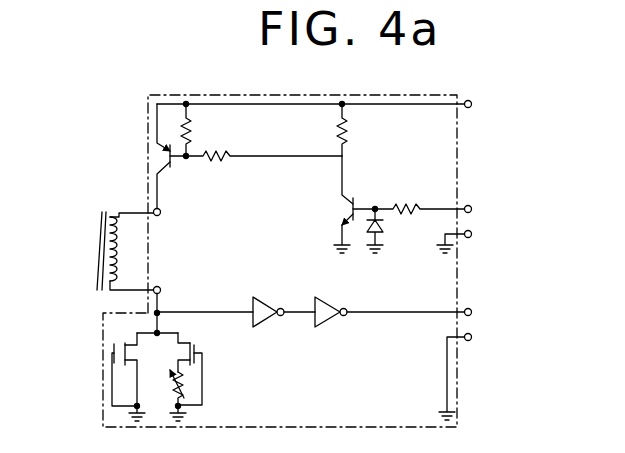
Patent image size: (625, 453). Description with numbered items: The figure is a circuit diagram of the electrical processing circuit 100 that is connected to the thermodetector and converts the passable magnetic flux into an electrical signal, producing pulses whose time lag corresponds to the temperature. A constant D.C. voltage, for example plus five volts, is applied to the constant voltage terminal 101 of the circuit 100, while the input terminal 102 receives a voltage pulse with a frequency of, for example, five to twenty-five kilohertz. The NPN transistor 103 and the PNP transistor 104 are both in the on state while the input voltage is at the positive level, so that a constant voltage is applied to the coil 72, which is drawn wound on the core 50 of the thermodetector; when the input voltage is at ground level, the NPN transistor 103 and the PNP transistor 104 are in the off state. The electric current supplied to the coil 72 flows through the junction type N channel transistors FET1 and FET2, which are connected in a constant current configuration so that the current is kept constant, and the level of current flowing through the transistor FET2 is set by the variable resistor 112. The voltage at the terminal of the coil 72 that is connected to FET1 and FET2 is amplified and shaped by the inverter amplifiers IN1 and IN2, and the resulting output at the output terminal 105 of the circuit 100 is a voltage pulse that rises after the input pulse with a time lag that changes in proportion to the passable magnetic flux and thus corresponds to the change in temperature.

The electrical processing circuit 100 is at (166, 95).
The constant voltage terminal 101 is at (470, 100).
The input terminal 102 is at (471, 206).
The NPN transistor 103 is at (356, 196).
The PNP transistor 104 is at (169, 169).
The output terminal 105 is at (471, 309).
The variable resistor 112 is at (180, 378).
The magnetic core 50 is at (102, 237).
The coil 72 is at (122, 212).
The junction type N channel FET FET1 is at (115, 345).
The junction type N channel FET FET2 is at (197, 342).
The inverter amplifier IN1 is at (260, 298).
The inverter amplifier IN2 is at (338, 303).